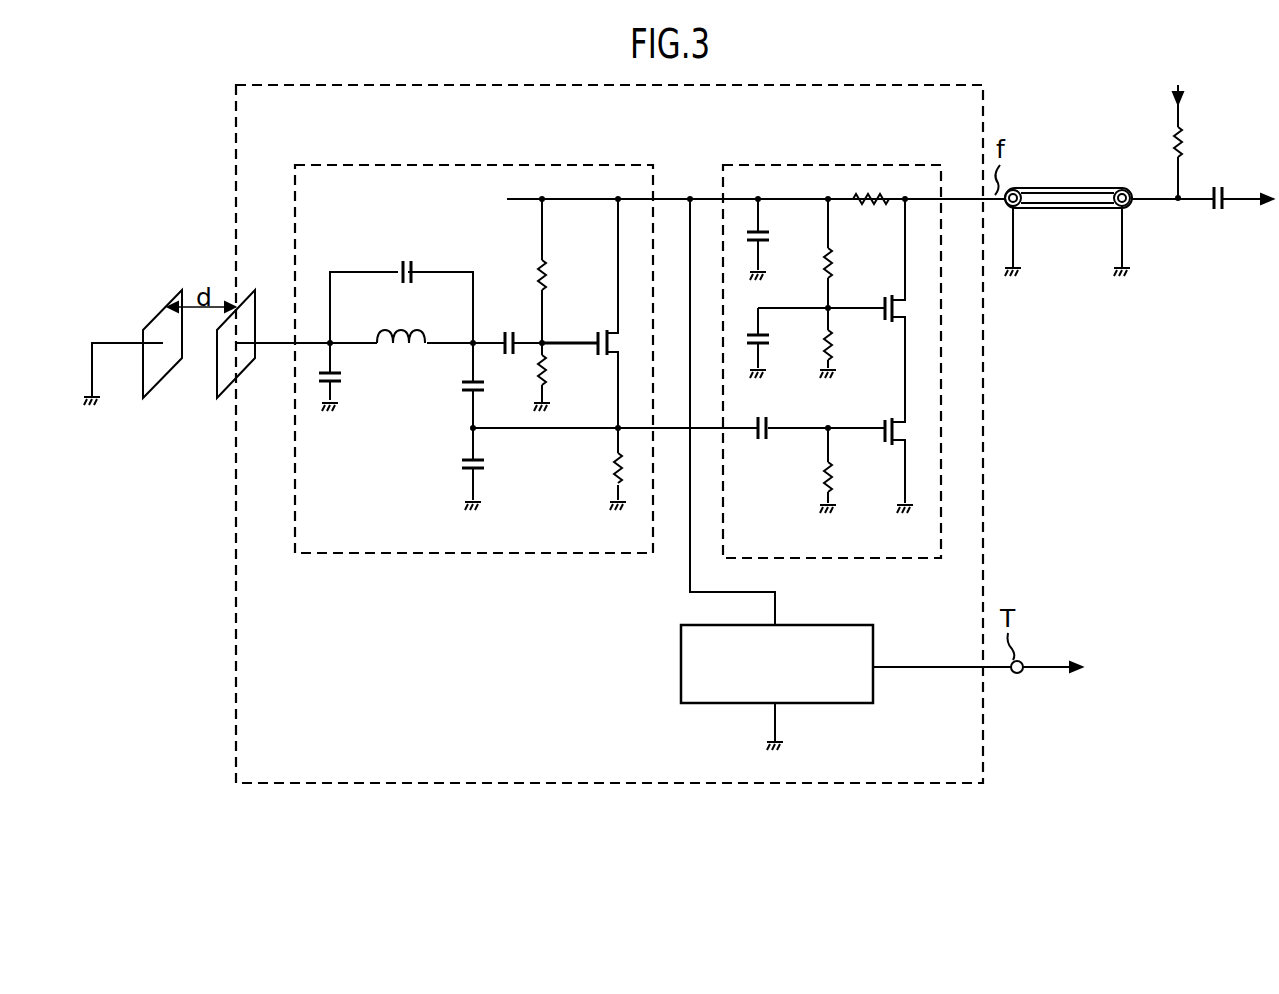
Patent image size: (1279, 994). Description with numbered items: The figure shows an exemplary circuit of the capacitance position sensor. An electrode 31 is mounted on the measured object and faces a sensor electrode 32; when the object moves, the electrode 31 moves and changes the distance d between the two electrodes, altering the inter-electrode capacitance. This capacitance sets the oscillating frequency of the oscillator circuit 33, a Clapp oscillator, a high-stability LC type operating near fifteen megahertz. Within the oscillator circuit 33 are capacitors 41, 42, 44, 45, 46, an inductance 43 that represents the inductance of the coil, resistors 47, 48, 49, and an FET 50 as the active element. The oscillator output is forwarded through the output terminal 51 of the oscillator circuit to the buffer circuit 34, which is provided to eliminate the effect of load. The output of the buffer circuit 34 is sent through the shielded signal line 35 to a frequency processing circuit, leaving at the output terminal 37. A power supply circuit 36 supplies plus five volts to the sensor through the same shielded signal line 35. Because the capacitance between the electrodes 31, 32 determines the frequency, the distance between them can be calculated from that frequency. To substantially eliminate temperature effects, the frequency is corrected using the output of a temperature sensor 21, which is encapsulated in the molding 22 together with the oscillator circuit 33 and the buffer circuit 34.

The temperature sensor 21 is at (681, 665).
The molding 22 is at (565, 787).
The electrode 31 is at (160, 378).
The sensor electrode 32 is at (236, 378).
The oscillator circuit 33 is at (347, 163).
The buffer circuit 34 is at (744, 163).
The shielded signal line 35 is at (1070, 186).
The power supply circuit 36 is at (1176, 108).
The output terminal 37 is at (1242, 205).
The capacitor 41 is at (340, 375).
The capacitor 42 is at (401, 258).
The inductance 43 is at (394, 336).
The capacitor 44 is at (460, 385).
The capacitor 45 is at (461, 465).
The capacitor 46 is at (507, 330).
The resistor 47 is at (548, 272).
The resistor 48 is at (547, 366).
The resistor 49 is at (610, 465).
The FET 50 is at (604, 330).
The output terminal of the oscillator circuit 51 is at (620, 427).